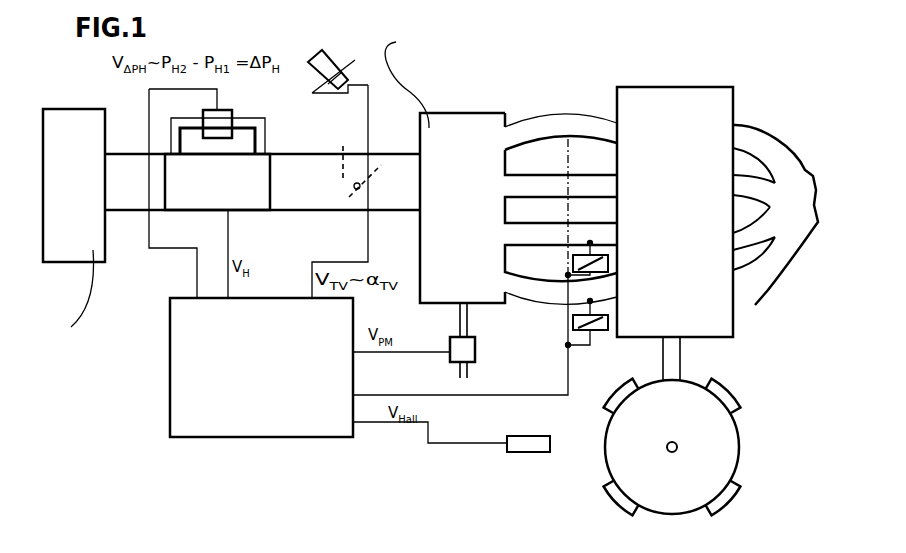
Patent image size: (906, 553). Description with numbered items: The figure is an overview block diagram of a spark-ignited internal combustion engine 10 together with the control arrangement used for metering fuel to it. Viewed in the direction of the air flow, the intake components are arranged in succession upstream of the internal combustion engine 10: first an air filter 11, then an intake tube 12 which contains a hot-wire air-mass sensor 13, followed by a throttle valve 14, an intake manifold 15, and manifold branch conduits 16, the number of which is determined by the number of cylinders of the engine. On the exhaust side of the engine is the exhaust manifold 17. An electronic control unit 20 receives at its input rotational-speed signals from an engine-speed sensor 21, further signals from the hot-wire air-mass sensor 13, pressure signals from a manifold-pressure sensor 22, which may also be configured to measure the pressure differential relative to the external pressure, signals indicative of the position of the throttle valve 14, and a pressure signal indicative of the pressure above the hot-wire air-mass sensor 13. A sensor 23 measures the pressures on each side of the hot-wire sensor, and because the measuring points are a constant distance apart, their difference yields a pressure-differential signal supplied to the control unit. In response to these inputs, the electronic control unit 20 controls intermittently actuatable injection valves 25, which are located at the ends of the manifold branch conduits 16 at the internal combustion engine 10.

The internal combustion engine 10 is at (672, 102).
The air filter 11 is at (71, 262).
The intake tube 12 is at (127, 197).
The hot-wire air-mass sensor 13 is at (208, 197).
The throttle valve 14 is at (344, 123).
The intake manifold 15 is at (466, 122).
The manifold branch conduits 16 is at (561, 122).
The exhaust manifold 17 is at (797, 176).
The electronic control unit 20 is at (182, 405).
The engine-speed sensor 21 is at (530, 450).
The manifold-pressure sensor 22 is at (478, 351).
The sensor 23 is at (223, 115).
The injection valves 25 is at (598, 330).